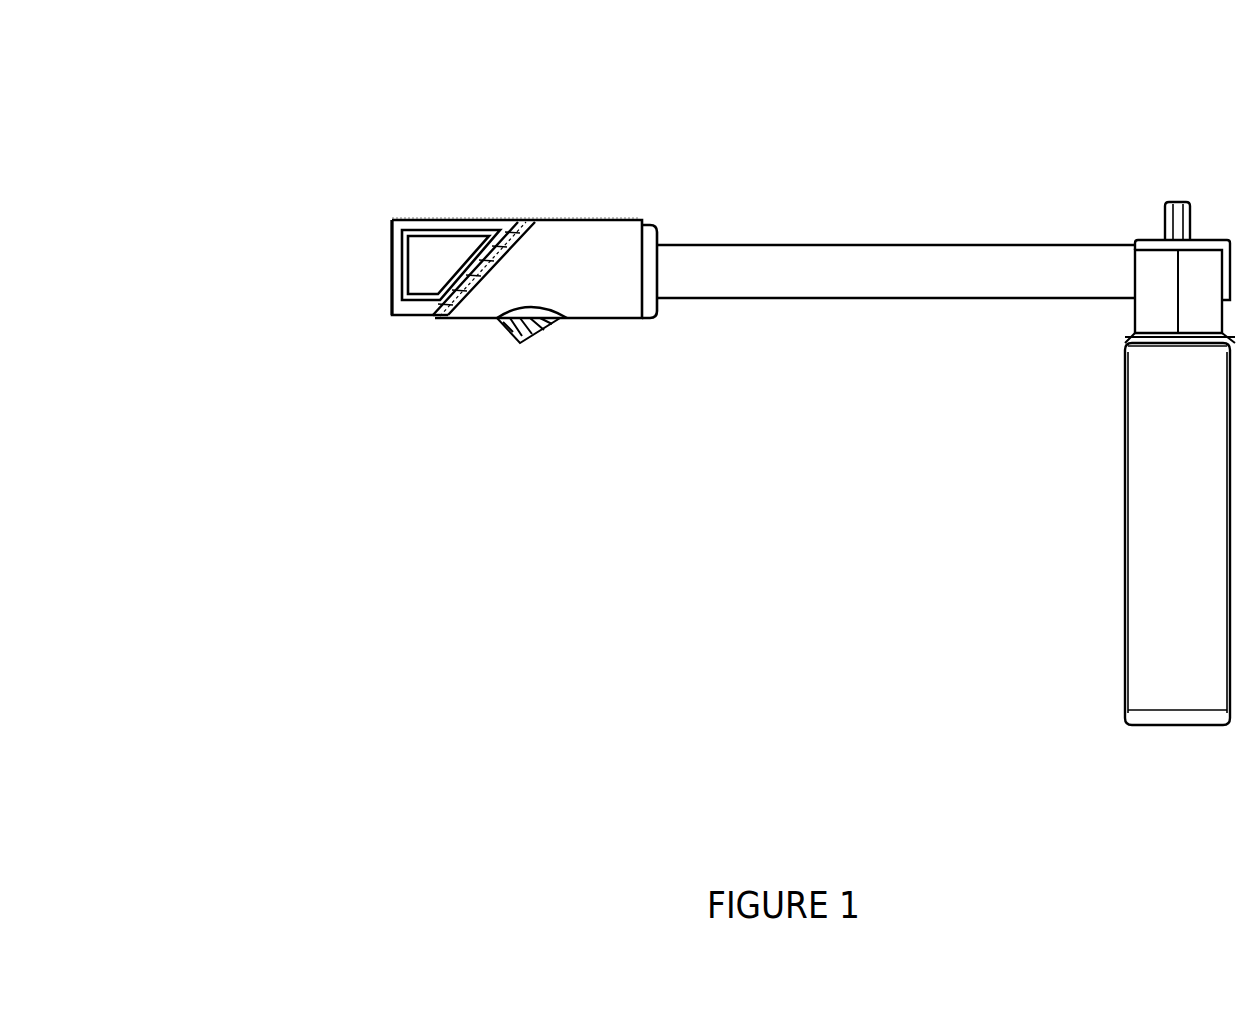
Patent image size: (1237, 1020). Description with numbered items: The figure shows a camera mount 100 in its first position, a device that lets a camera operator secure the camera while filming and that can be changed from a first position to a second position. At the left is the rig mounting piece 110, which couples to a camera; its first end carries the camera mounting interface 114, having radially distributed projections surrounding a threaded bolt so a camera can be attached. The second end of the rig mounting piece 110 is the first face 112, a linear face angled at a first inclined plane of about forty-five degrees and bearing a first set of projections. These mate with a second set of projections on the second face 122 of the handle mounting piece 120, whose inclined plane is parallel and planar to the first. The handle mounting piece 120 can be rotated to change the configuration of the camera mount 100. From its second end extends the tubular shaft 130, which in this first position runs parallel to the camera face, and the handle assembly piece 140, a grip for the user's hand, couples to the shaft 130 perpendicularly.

The camera mount 100 is at (328, 133).
The rig mounting piece 110 is at (435, 232).
The first face 112 is at (520, 226).
The camera mounting interface 114 is at (398, 270).
The handle mounting piece 120 is at (608, 283).
The second face 122 is at (448, 303).
The shaft 130 is at (832, 282).
The handle assembly piece 140 is at (1150, 488).